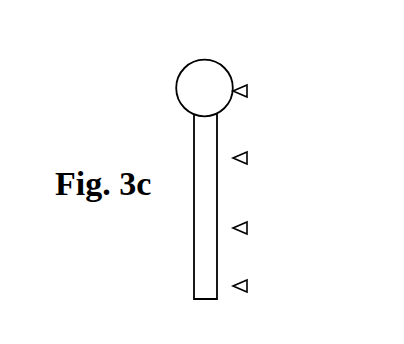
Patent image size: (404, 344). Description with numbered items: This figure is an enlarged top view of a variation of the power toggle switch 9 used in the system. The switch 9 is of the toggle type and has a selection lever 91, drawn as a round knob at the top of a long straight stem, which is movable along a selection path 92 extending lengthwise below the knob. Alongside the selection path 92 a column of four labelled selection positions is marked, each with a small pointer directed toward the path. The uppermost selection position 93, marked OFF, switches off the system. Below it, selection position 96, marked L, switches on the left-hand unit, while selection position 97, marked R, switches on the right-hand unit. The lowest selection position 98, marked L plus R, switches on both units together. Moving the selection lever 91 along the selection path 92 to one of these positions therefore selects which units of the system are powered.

The switch 9 is at (148, 85).
The selection lever 91 is at (207, 80).
The selection path 92 is at (195, 268).
The selection position 93 is at (305, 63).
The selection position 96 is at (280, 155).
The selection position 97 is at (280, 223).
The selection position 98 is at (318, 288).